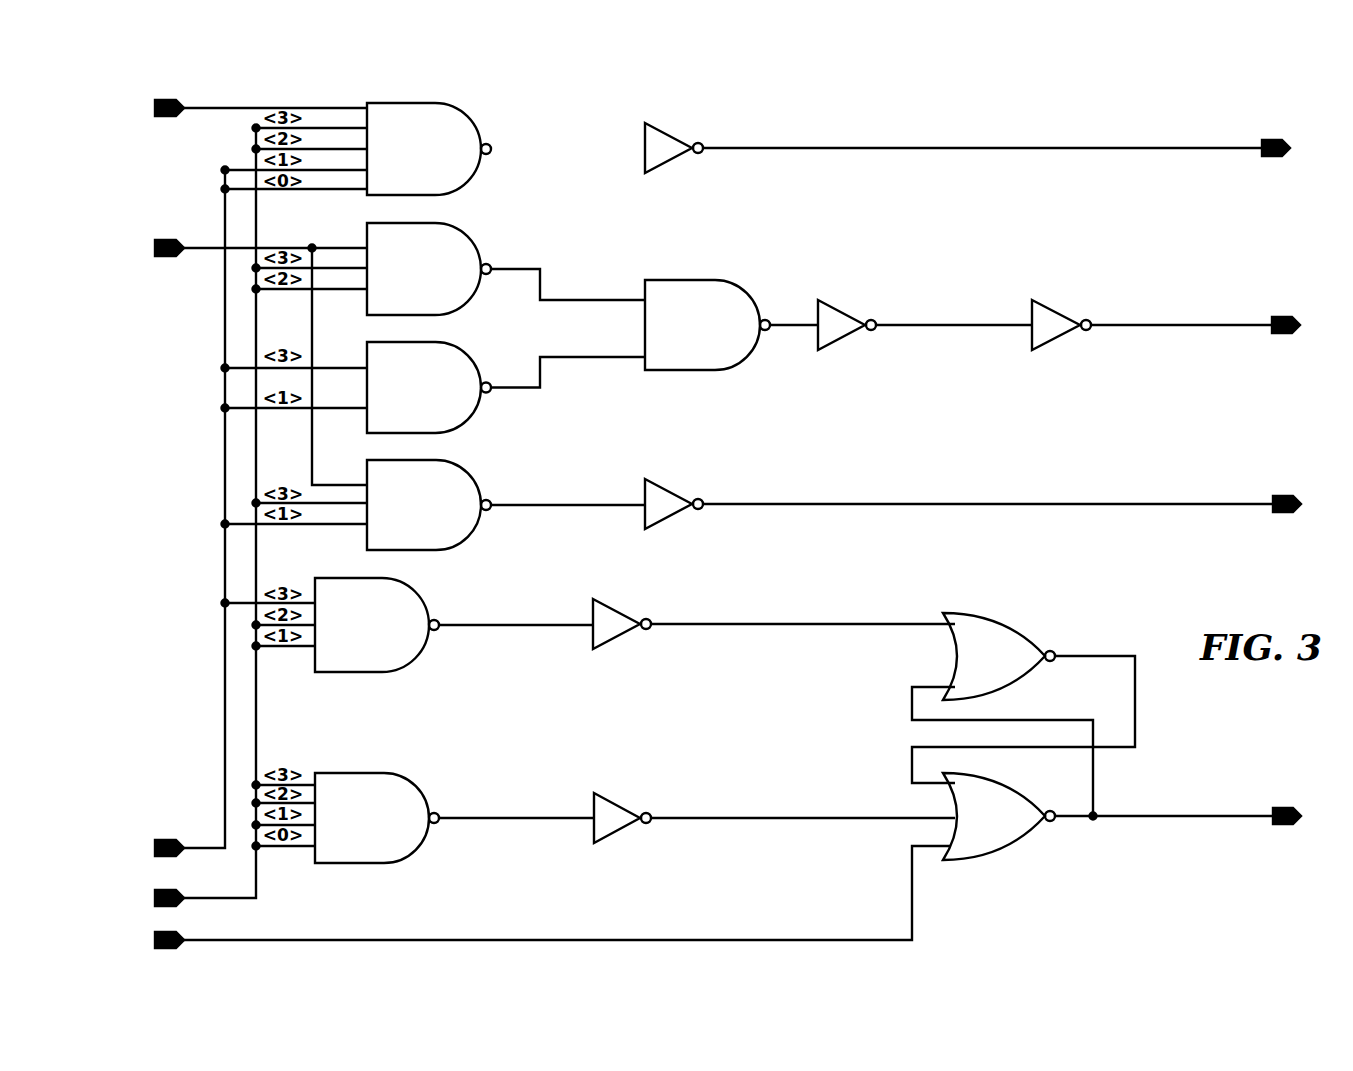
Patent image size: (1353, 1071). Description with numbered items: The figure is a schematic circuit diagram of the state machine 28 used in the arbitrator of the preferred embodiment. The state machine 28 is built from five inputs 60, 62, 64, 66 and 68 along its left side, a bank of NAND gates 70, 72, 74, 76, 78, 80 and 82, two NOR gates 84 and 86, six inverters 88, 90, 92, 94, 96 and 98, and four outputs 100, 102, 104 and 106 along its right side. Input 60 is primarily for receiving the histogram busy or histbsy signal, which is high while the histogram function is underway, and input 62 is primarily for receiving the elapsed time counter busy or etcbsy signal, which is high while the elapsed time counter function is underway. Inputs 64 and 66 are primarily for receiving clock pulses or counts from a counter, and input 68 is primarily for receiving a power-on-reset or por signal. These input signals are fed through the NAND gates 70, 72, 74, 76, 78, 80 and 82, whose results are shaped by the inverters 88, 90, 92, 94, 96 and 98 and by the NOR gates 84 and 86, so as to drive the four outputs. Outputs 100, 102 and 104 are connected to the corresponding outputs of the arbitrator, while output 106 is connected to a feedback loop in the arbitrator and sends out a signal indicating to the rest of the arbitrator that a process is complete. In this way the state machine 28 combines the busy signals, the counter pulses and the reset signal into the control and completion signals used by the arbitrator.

The state machine 28 is at (1183, 116).
The input 60 is at (170, 101).
The input 62 is at (170, 243).
The input 64 is at (170, 841).
The input 66 is at (170, 891).
The input 68 is at (170, 933).
The NAND gate 70 is at (470, 125).
The NAND gate 72 is at (470, 245).
The NAND gate 74 is at (470, 365).
The NAND gate 76 is at (470, 483).
The NAND gate 78 is at (418, 603).
The NAND gate 80 is at (418, 797).
The NAND gate 82 is at (748, 296).
The NOR gate 84 is at (986, 617).
The NOR gate 86 is at (988, 858).
The inverter 88 is at (672, 138).
The inverter 90 is at (672, 494).
The inverter 92 is at (618, 614).
The inverter 94 is at (618, 808).
The inverter 96 is at (842, 314).
The inverter 98 is at (1056, 314).
The output 100 is at (1291, 133).
The output 102 is at (1300, 315).
The output 104 is at (1301, 490).
The output 106 is at (1301, 805).